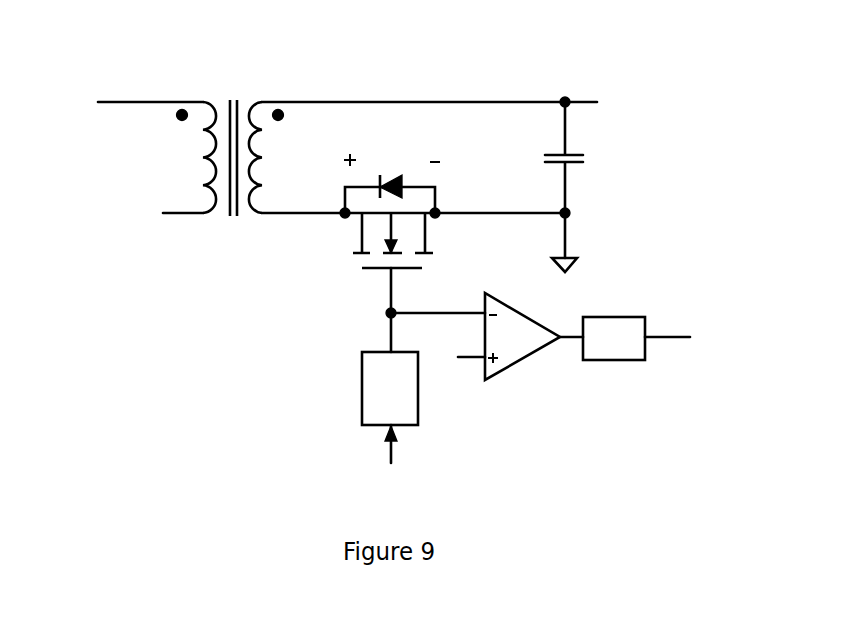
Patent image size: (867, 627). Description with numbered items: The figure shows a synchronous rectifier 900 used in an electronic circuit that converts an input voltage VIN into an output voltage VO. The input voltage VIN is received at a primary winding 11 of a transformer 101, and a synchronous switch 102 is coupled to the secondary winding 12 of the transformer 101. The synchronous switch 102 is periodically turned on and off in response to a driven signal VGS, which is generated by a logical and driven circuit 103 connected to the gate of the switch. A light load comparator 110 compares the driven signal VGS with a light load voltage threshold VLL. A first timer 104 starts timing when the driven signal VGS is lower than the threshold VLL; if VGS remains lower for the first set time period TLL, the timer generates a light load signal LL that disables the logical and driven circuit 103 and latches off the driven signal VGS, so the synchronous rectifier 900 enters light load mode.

The synchronous rectifier 900 is at (167, 55).
The primary winding 11 is at (190, 157).
The secondary winding 12 is at (274, 157).
The transformer 101 is at (235, 219).
The synchronous switch 102 is at (434, 223).
The logical and driven circuit 103 is at (390, 388).
The first timer 104 is at (601, 315).
The light load comparator 110 is at (522, 336).